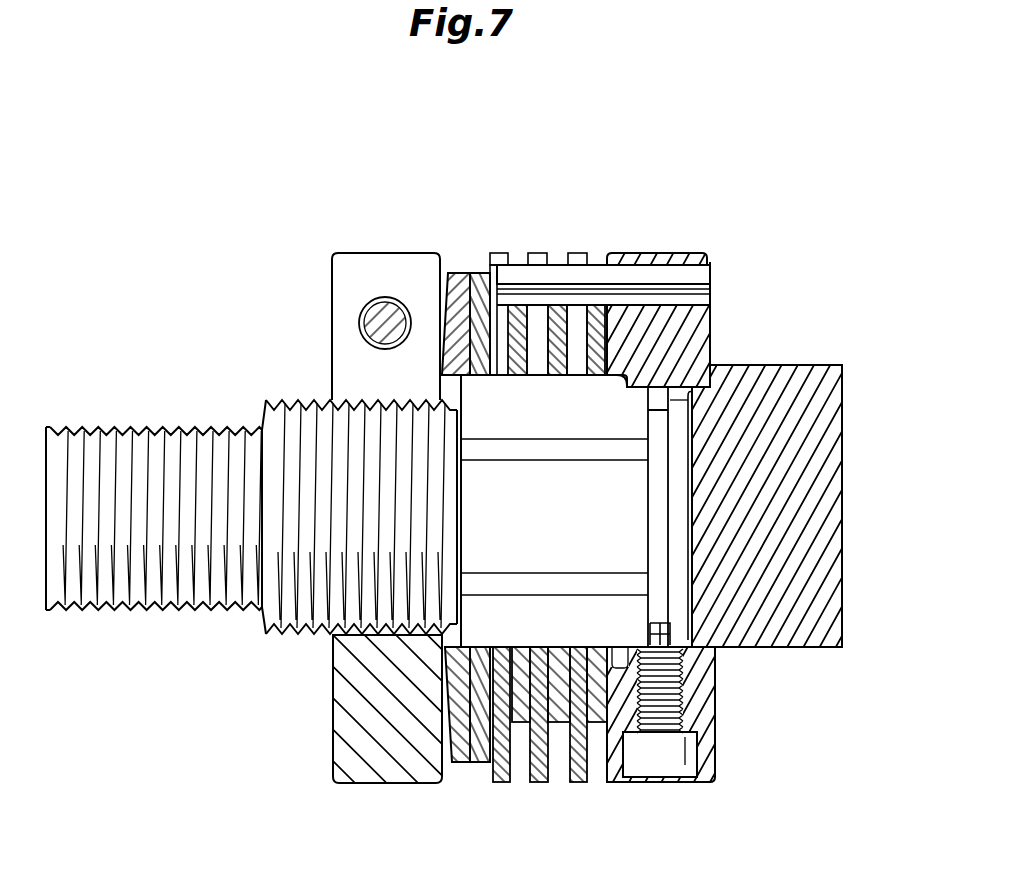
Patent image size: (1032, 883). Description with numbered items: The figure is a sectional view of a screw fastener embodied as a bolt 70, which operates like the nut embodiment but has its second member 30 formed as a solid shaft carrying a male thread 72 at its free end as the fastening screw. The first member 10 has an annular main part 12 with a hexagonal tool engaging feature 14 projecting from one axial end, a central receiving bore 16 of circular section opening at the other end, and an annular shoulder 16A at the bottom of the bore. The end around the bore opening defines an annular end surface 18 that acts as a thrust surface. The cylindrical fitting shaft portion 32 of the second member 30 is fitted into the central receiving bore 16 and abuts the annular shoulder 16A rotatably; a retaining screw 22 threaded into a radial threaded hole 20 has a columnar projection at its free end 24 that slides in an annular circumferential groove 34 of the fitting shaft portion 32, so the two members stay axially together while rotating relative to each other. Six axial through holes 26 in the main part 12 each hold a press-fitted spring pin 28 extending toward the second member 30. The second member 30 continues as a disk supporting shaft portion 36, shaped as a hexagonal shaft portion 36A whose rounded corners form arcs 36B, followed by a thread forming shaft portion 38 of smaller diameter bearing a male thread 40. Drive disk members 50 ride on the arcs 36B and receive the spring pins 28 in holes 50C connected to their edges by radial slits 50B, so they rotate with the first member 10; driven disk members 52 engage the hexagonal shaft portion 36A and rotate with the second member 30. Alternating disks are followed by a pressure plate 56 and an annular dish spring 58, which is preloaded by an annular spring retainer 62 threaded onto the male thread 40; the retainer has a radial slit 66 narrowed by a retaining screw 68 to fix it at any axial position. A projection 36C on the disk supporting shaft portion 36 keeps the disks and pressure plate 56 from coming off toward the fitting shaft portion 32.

The first member 10 is at (718, 566).
The annular main part 12 is at (703, 322).
The tool engaging feature 14 is at (828, 393).
The central receiving bore 16 is at (763, 487).
The annular shoulder 16A is at (683, 562).
The annular end surface 18 is at (597, 715).
The threaded hole 20 is at (670, 705).
The retaining screw 22 is at (663, 760).
The free end of the retaining screw 24 is at (660, 637).
The axial through hole 26 is at (655, 270).
The spring pin 28 is at (617, 270).
The second member 30 is at (470, 765).
The cylindrical fitting shaft portion 32 is at (680, 468).
The annular circumferential groove 34 is at (672, 495).
The disk supporting shaft portion 36 is at (551, 725).
The hexagonal shaft portion 36A is at (490, 627).
The arc 36B is at (592, 585).
The projection 36C is at (698, 292).
The thread forming shaft portion 38 is at (344, 527).
The male thread 40 is at (344, 376).
The drive disk member 50 is at (580, 378).
The radial slit 50B is at (503, 253).
The hole 50C is at (550, 268).
The driven disk member 52 is at (592, 300).
The pressure plate 56 is at (478, 271).
The annular dish spring 58 is at (439, 518).
The annular spring retainer 62 is at (340, 753).
The slit 66 is at (341, 299).
The retaining screw 68 is at (368, 307).
The bolt 70 is at (609, 272).
The male thread 72 is at (128, 578).